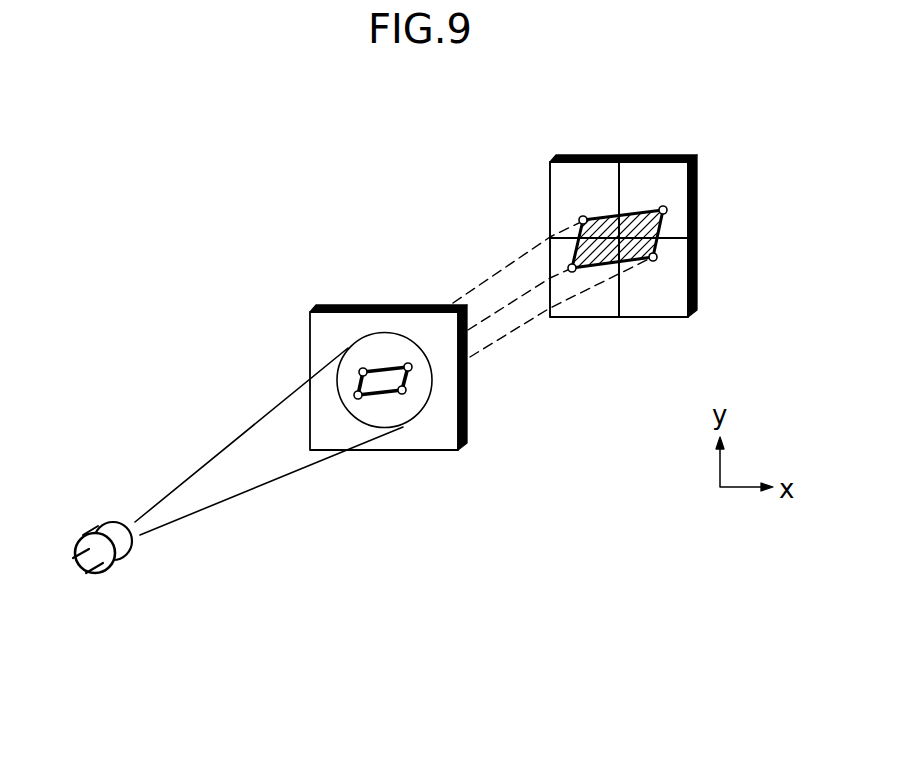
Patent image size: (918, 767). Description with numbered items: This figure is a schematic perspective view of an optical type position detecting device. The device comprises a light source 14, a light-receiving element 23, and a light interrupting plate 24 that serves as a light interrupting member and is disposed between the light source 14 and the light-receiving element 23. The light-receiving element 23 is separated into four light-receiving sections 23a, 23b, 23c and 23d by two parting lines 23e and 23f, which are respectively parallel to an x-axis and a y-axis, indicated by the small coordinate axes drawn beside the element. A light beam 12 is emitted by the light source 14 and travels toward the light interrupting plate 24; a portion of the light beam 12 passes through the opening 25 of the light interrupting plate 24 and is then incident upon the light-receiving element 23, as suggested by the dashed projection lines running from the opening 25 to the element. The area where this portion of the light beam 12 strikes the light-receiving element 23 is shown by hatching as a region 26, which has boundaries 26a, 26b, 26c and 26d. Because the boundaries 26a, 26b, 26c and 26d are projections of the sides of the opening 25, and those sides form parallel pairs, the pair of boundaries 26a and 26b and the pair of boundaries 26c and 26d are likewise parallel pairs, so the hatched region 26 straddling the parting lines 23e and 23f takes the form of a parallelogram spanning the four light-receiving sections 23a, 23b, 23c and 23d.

The light beam 12 is at (215, 456).
The light source 14 is at (91, 540).
The light-receiving element 23 is at (652, 239).
The light-receiving section 23a is at (656, 178).
The light-receiving section 23b is at (576, 187).
The light-receiving section 23c is at (588, 307).
The light-receiving section 23d is at (668, 302).
The parting line 23e is at (676, 241).
The parting line 23f is at (625, 181).
The light interrupting plate 24 is at (303, 324).
The opening 25 is at (388, 366).
The region 26 is at (631, 232).
The boundary 26a is at (608, 218).
The boundary 26b is at (605, 265).
The boundary 26c is at (574, 243).
The boundary 26d is at (659, 254).